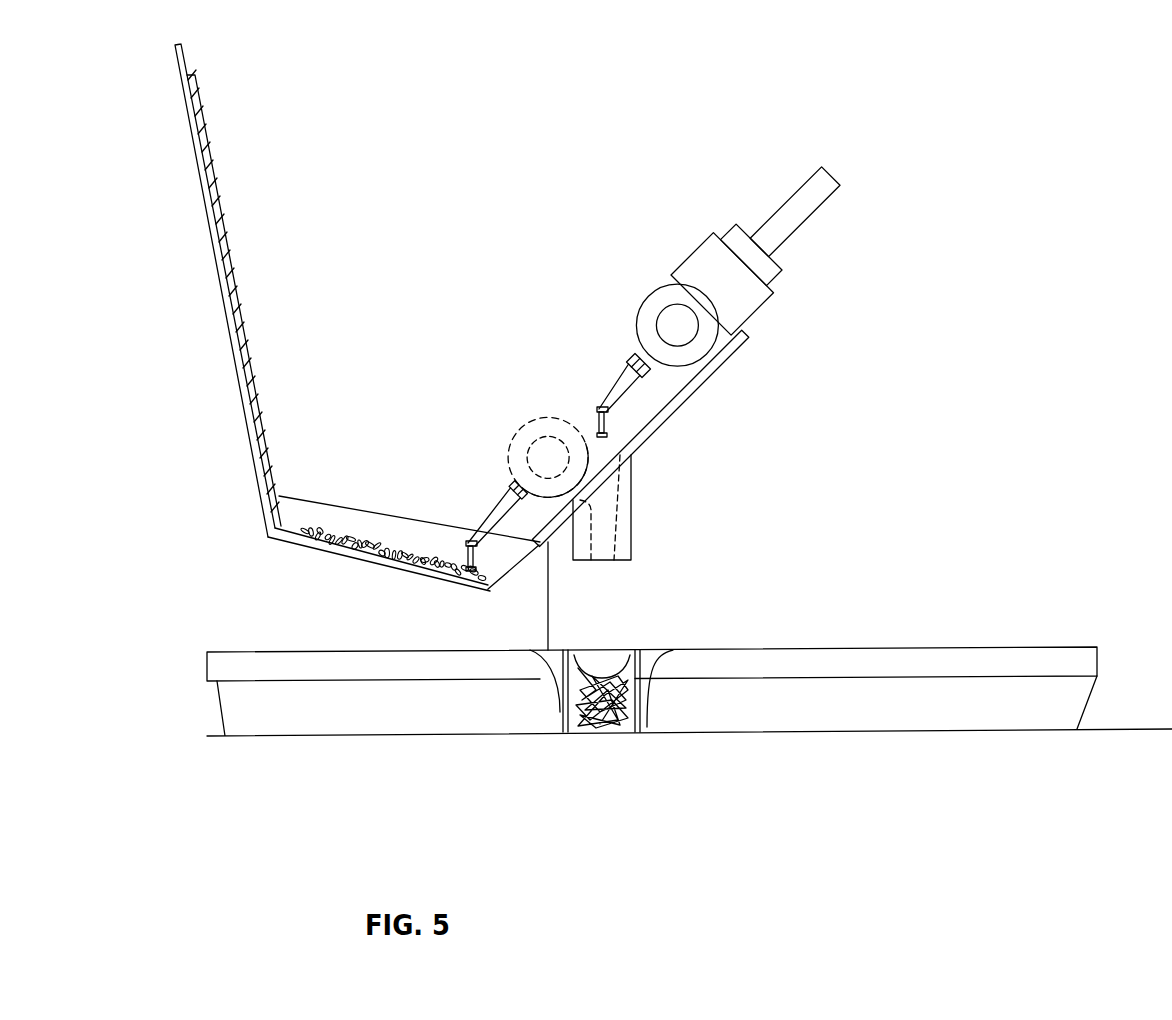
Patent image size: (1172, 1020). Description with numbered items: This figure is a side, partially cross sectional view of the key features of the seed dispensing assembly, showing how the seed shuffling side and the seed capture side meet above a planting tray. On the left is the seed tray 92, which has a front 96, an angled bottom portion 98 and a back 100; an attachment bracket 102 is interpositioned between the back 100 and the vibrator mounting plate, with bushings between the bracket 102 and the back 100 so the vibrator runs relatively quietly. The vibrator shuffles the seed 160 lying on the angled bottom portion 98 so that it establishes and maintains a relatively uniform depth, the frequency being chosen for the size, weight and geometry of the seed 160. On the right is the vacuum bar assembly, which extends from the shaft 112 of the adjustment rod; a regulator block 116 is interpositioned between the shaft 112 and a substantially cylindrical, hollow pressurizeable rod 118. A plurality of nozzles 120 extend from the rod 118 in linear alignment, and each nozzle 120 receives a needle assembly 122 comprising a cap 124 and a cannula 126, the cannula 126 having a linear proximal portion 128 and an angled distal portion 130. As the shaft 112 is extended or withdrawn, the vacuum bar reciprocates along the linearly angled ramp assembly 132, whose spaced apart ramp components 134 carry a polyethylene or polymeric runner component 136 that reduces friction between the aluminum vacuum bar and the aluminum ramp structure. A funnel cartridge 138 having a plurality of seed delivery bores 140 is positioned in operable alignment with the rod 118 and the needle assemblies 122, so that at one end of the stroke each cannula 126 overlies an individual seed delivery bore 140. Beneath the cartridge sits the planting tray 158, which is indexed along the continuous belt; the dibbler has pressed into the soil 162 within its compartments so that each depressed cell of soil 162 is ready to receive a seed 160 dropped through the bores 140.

The tray 92 is at (252, 332).
The front 96 is at (512, 570).
The angled bottom portion 98 is at (307, 538).
The back 100 is at (233, 257).
The attachment bracket 102 is at (186, 60).
The shaft 112 is at (793, 182).
The regulator block 116 is at (700, 246).
The hollow pressurizeable rod 118 is at (655, 286).
The nozzles 120 is at (647, 355).
The needle assembly 122 is at (618, 400).
The cap 124 is at (630, 383).
The cannula 126 is at (602, 408).
The linear proximal portion 128 is at (468, 541).
The angled distal portion 130 is at (472, 548).
The linearly angled ramp assembly 132 is at (708, 566).
The ramp components 134 is at (723, 350).
The runner component 136 is at (678, 392).
The funnel cartridge 138 is at (620, 530).
The seed delivery bore 140 is at (595, 535).
The tray 158 is at (285, 703).
The seed 160 is at (380, 540).
The soil 162 is at (617, 733).